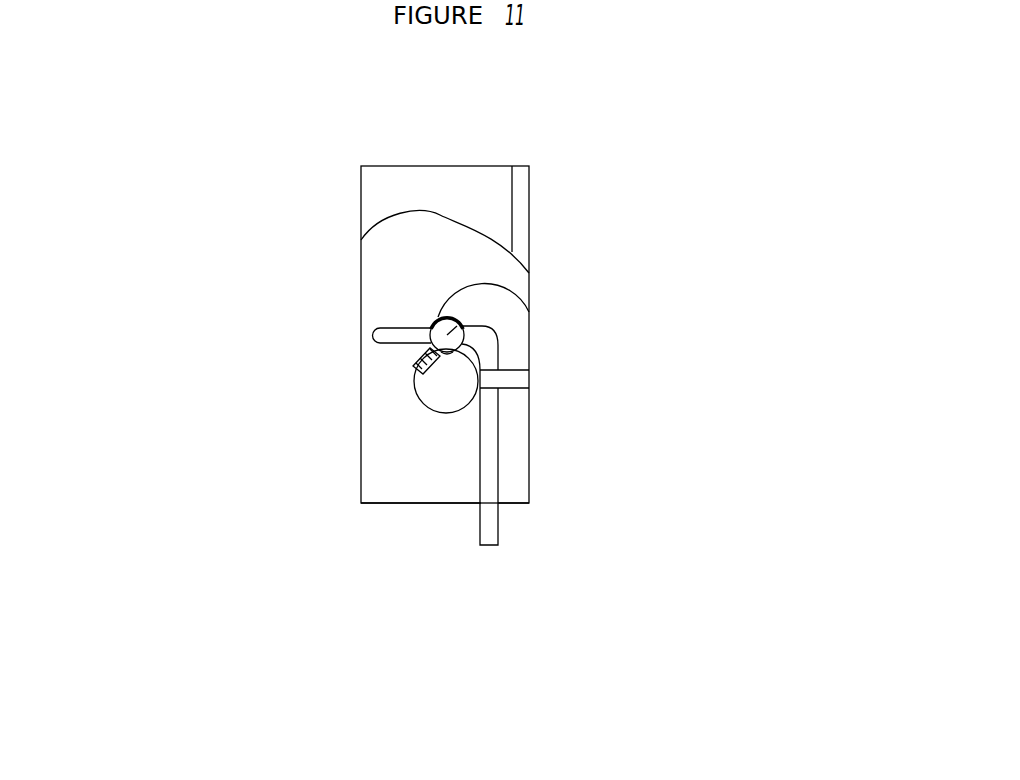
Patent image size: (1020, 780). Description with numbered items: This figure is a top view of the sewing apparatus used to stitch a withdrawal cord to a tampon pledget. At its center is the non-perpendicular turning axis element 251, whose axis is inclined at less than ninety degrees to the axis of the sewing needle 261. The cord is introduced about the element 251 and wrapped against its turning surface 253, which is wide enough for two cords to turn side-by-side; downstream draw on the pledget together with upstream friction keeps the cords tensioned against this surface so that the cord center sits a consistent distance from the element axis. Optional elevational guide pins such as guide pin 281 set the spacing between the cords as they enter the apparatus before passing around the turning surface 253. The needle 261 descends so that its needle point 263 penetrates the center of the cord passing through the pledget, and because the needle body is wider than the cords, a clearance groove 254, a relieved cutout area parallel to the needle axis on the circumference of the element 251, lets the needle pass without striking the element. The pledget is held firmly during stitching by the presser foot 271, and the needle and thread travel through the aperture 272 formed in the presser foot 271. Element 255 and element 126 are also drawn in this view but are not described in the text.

The presser foot 271 is at (487, 177).
The sewing needle 261 is at (430, 331).
The needle point 263 is at (460, 325).
The aperture 272 is at (385, 341).
The friction pad 255 is at (420, 367).
The non-perpendicular turning axis element 251 is at (418, 398).
The clearance groove 254 is at (447, 355).
The turning surface 253 is at (467, 357).
The cord guide pin 281 is at (530, 387).
The channel 126 is at (494, 524).